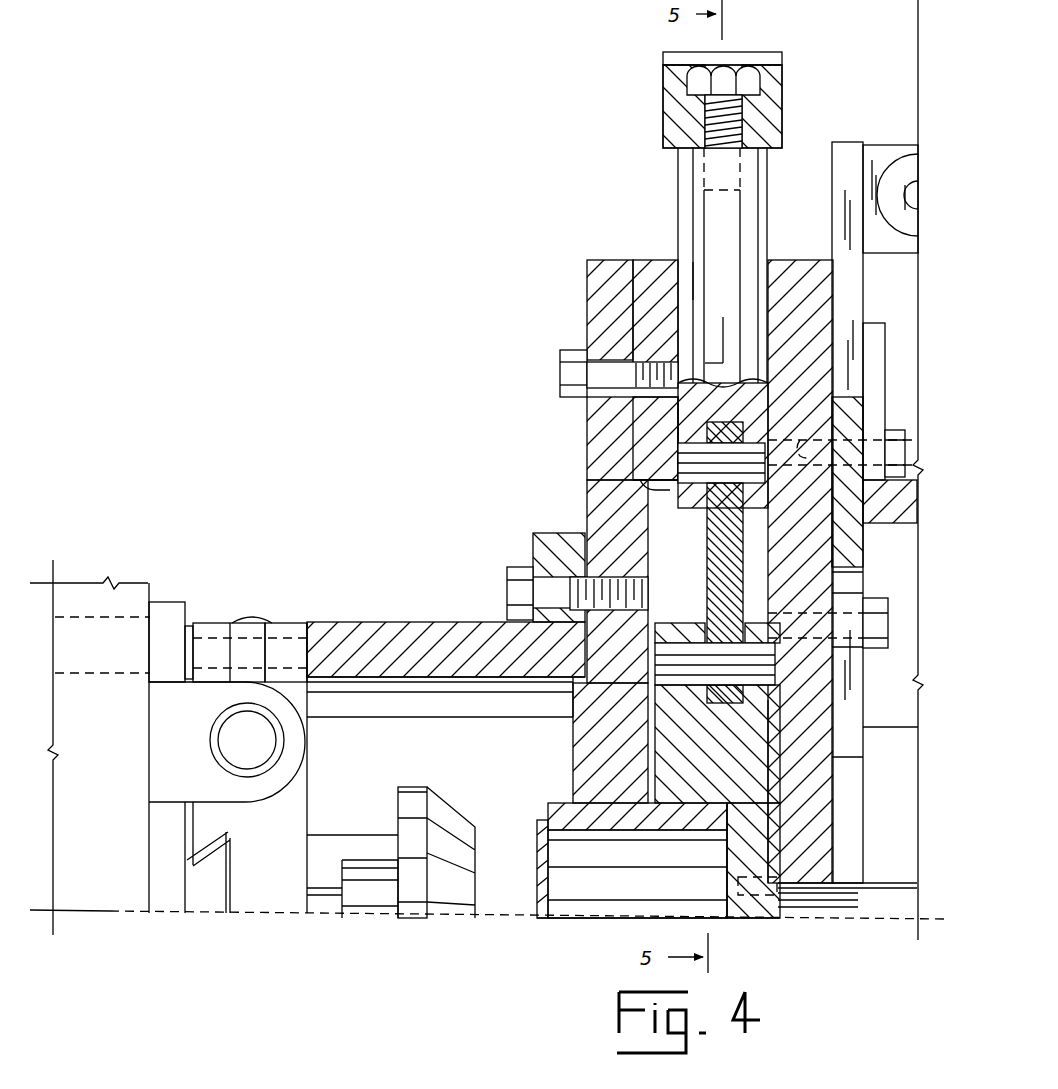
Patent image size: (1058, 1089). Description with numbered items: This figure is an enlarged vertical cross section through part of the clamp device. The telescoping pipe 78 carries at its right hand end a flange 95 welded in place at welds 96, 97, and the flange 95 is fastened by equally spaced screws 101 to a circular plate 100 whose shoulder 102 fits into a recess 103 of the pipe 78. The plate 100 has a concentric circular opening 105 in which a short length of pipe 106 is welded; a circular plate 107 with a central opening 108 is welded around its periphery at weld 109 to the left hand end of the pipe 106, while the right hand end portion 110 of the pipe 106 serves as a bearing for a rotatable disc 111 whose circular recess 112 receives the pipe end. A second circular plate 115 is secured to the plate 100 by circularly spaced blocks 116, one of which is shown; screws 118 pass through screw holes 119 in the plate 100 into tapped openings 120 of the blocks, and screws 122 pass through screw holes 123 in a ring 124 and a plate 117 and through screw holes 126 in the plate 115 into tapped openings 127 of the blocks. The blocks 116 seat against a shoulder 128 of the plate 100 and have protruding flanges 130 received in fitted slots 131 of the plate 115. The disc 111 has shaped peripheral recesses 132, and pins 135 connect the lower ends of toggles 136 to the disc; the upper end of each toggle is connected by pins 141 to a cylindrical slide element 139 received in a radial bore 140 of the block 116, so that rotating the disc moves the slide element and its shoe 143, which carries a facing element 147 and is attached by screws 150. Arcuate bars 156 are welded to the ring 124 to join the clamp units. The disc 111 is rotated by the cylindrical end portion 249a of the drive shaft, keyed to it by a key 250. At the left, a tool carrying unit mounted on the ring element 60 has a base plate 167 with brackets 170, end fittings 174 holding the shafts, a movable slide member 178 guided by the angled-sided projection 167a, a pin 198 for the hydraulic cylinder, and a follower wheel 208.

The ring element 60 is at (104, 745).
The pipe 78 is at (315, 622).
The flange 95 is at (550, 533).
The weld 96 is at (507, 600).
The weld 97 is at (533, 568).
The circular plate 100 is at (587, 305).
The screws 101 is at (507, 580).
The shoulder 102 is at (555, 650).
The recess 103 is at (450, 665).
The concentric circular opening 105 is at (585, 812).
The pipe 106 is at (560, 803).
The circular plate 107 is at (548, 860).
The central opening 108 is at (540, 916).
The weld 109 is at (540, 823).
The right hand end portion 110 is at (655, 752).
The rotatable disc 111 is at (768, 918).
The circular recess 112 is at (727, 895).
The second circular plate 115 is at (788, 260).
The blocks 116 is at (640, 260).
The plate 117 is at (884, 333).
The screws 118 is at (560, 373).
The screw holes 119 is at (600, 380).
The tapped openings 120 is at (680, 420).
The screws 122 is at (887, 640).
The screw holes 123 is at (865, 557).
The ring 124 is at (866, 530).
The screw holes 126 is at (817, 438).
The tapped openings 127 is at (798, 425).
The shoulder 128 is at (640, 470).
The protruding flanges 130 is at (778, 500).
The fitted slots 131 is at (768, 485).
The shaped recesses 132 is at (780, 740).
The pins 135 is at (678, 640).
The toggles 136 is at (707, 551).
The cylindrical slide element 139 is at (678, 190).
The radial bore 140 is at (688, 270).
The pins 141 is at (640, 488).
The shoe 143 is at (663, 95).
The facing elements 147 is at (663, 58).
The screws 150 is at (745, 67).
The bars 156 is at (888, 728).
The base plate 167 is at (182, 602).
The angled-sided projection 167a is at (232, 840).
The bracket 170 is at (300, 705).
The end fittings 174 is at (213, 765).
The movable slide member 178 is at (215, 623).
The pin 198 is at (300, 623).
The follower wheel 208 is at (412, 787).
The cylindrical end portion 249a is at (890, 877).
The key 250 is at (783, 917).